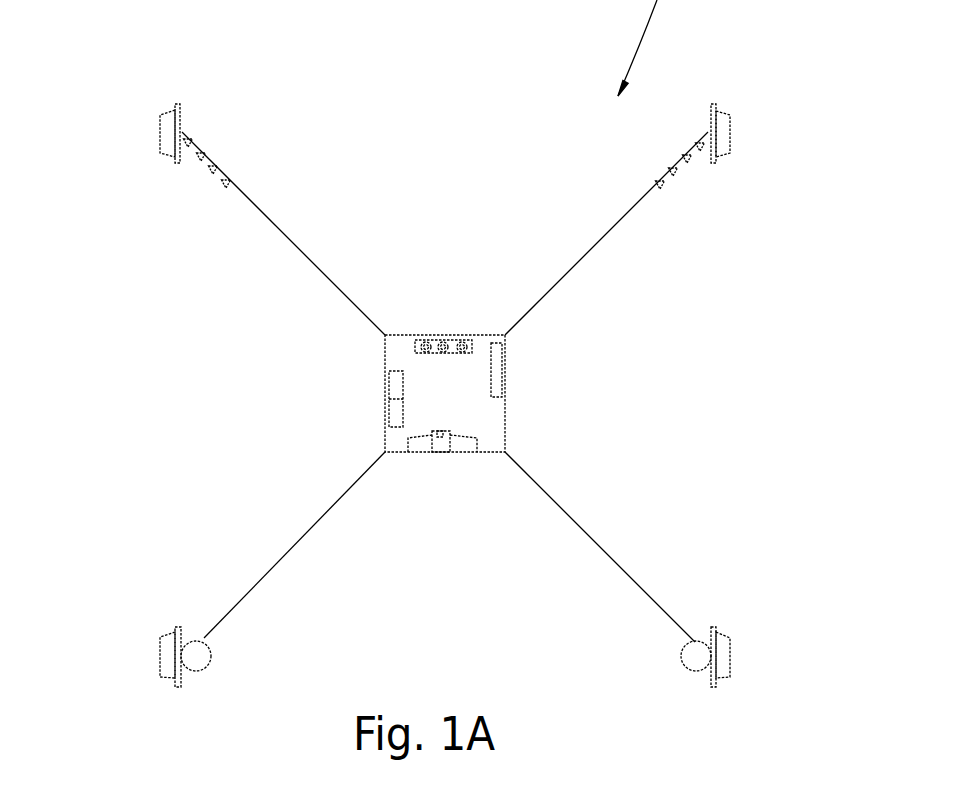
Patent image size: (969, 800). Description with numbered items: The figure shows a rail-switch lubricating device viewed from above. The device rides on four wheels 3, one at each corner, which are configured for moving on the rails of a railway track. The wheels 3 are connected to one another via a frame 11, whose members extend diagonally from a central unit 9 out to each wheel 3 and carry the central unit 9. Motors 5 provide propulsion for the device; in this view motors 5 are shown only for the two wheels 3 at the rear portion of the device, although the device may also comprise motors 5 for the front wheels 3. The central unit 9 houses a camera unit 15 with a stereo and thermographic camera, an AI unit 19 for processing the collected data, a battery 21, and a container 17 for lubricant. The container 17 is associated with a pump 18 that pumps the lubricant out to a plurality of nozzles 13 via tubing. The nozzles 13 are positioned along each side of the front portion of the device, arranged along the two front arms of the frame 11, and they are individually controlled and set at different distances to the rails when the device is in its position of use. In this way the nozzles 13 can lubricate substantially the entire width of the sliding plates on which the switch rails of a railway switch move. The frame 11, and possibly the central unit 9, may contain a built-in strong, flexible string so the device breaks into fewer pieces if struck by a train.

The wheels 3 is at (158, 130).
The motors 5 is at (202, 672).
The central unit 9 is at (253, 402).
The frame 11 is at (601, 240).
The nozzles 13 is at (230, 142).
The camera unit 15 is at (450, 335).
The container 17 is at (462, 445).
The pump 18 is at (438, 450).
The AI unit 19 is at (507, 383).
The battery 21 is at (385, 397).